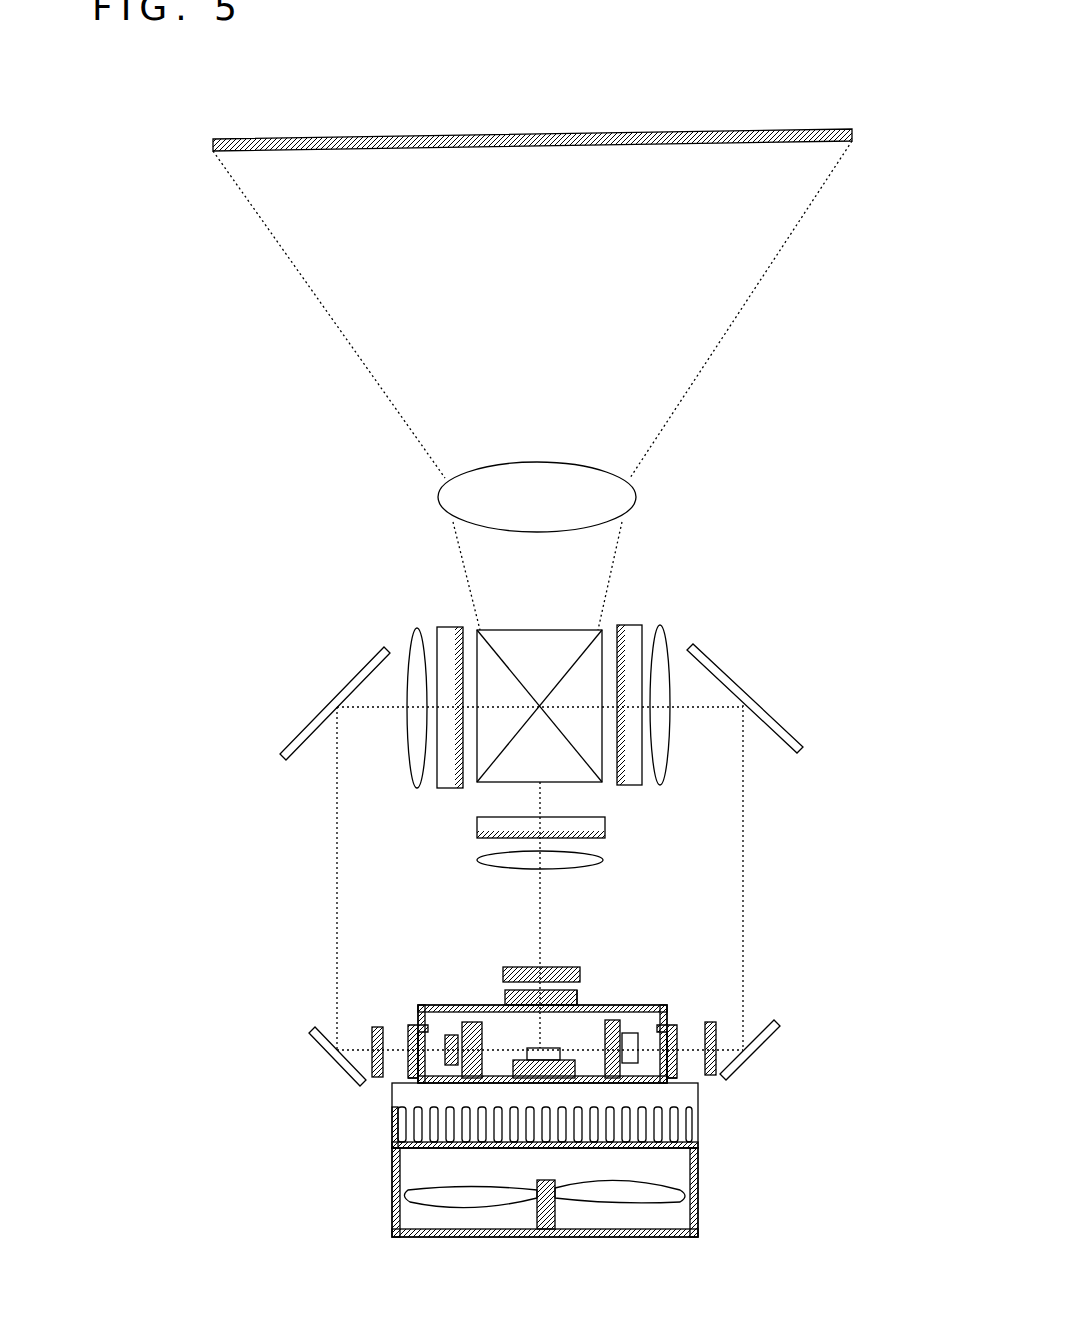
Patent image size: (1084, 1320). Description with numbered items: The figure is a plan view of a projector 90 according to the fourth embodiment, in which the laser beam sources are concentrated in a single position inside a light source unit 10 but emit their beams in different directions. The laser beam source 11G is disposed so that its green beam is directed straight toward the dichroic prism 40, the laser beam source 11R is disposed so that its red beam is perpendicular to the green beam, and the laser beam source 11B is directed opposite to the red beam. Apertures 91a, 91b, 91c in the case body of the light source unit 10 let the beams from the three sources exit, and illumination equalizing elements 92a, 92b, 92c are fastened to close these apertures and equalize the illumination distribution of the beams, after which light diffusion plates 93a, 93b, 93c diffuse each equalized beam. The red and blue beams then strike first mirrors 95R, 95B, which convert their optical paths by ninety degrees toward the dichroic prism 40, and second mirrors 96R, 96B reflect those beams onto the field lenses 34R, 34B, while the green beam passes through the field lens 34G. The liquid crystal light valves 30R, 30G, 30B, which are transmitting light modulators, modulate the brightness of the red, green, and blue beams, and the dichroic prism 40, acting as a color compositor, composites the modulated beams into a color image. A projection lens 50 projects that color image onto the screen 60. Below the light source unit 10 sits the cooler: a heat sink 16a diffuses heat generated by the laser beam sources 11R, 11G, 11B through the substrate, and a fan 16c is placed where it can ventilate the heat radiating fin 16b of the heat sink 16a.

The projector 90 is at (840, 90).
The screen 60 is at (852, 135).
The projection lens 50 is at (632, 495).
The dichroic prism 40 is at (600, 630).
The liquid crystal light valve 30R is at (449, 628).
The field lens 34R is at (410, 635).
The liquid crystal light valve 30B is at (630, 626).
The field lens 34B is at (665, 635).
The liquid crystal light valve 30G is at (605, 830).
The field lens 34G is at (603, 862).
The second mirror 96R is at (338, 692).
The second mirror 96B is at (732, 670).
The first mirror 95R is at (312, 1047).
The first mirror 95B is at (757, 1048).
The light source unit 10 is at (660, 960).
The laser beam source 11R is at (480, 1036).
The laser beam source 11G is at (514, 1070).
The laser beam source 11B is at (607, 1050).
The aperture 91a is at (413, 1025).
The aperture 91b is at (590, 1000).
The aperture 91c is at (672, 1025).
The illumination equalizing element 92a is at (410, 1075).
The illumination equalizing element 92b is at (505, 992).
The illumination equalizing element 92c is at (700, 1020).
The light diffusion plate 93a is at (378, 1027).
The light diffusion plate 93b is at (563, 967).
The light diffusion plate 93c is at (712, 1077).
The heat sink 16a is at (698, 1107).
The heat radiating fin 16b is at (392, 1120).
The fan 16c is at (698, 1200).